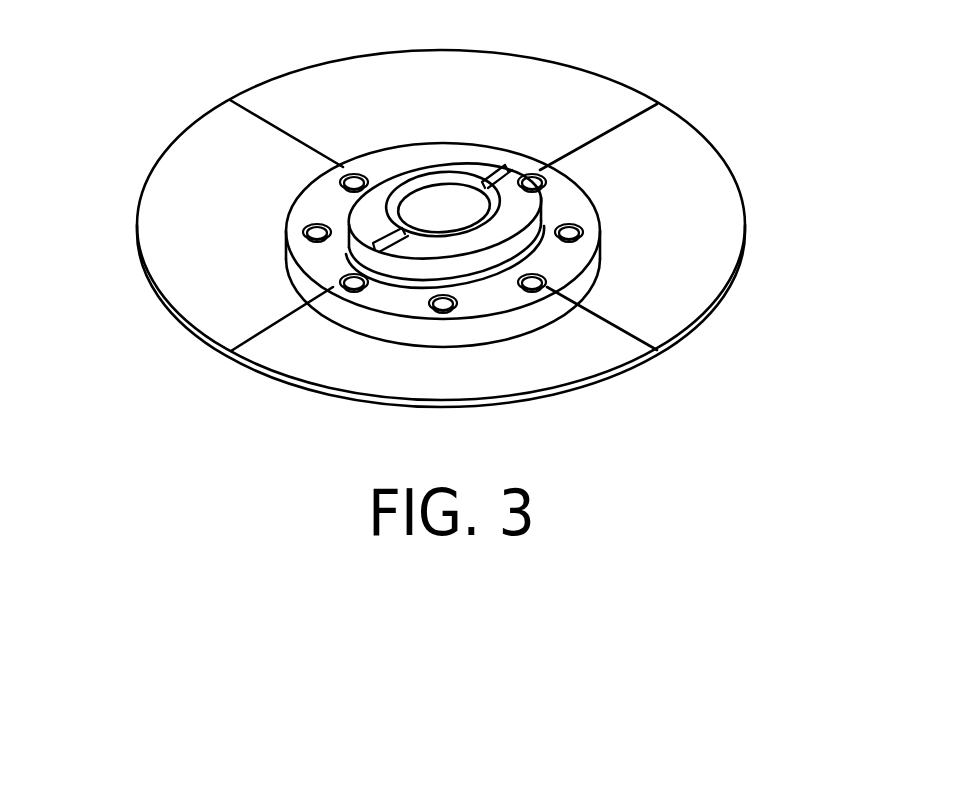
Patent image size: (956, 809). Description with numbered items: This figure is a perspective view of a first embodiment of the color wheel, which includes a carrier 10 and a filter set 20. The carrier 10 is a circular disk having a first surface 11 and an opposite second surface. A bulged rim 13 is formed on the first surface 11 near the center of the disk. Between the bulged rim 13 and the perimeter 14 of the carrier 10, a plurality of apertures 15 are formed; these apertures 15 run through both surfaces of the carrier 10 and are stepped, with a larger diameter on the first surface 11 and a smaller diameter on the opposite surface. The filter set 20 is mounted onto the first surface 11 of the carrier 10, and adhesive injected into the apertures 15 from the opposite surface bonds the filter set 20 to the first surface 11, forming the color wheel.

The carrier 10 is at (540, 335).
The first surface 11 is at (563, 204).
The bulged rim 13 is at (441, 160).
The perimeter 14 is at (587, 280).
The apertures 15 is at (306, 233).
The filter set 20 is at (693, 332).